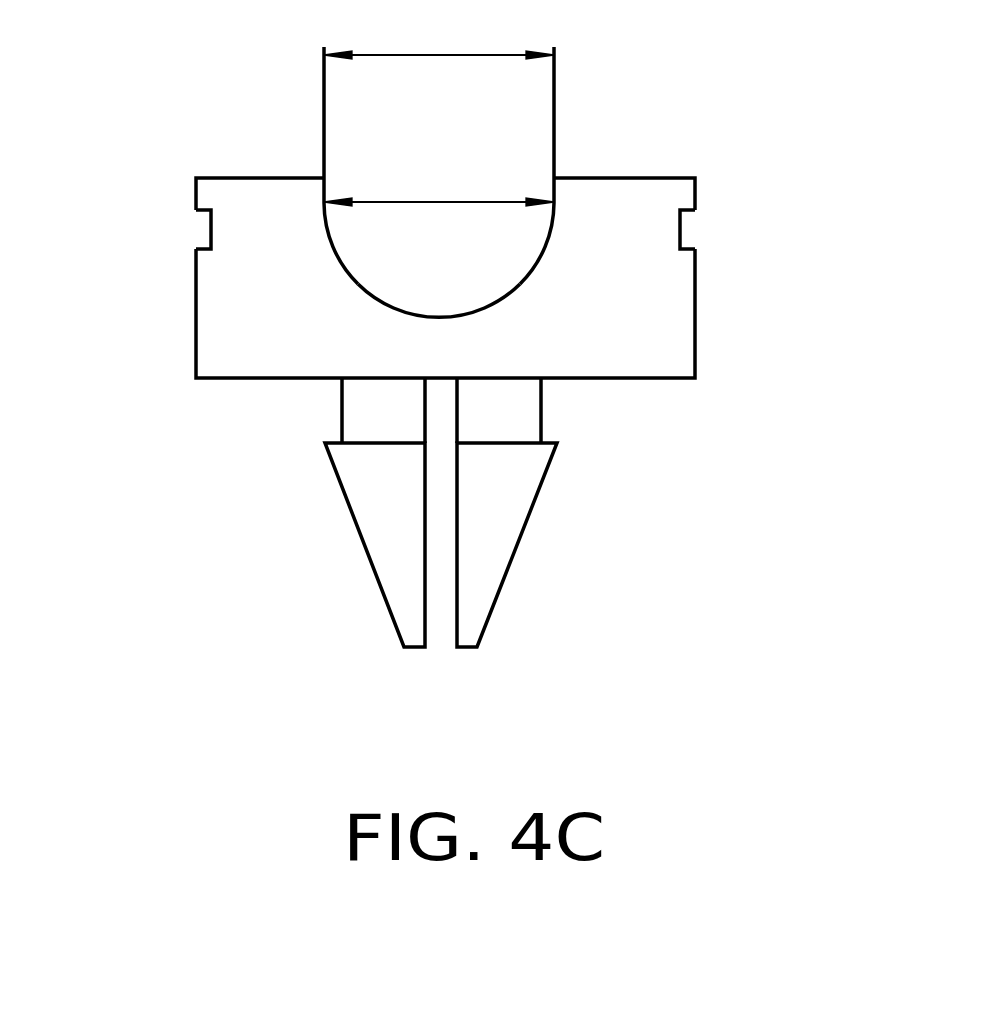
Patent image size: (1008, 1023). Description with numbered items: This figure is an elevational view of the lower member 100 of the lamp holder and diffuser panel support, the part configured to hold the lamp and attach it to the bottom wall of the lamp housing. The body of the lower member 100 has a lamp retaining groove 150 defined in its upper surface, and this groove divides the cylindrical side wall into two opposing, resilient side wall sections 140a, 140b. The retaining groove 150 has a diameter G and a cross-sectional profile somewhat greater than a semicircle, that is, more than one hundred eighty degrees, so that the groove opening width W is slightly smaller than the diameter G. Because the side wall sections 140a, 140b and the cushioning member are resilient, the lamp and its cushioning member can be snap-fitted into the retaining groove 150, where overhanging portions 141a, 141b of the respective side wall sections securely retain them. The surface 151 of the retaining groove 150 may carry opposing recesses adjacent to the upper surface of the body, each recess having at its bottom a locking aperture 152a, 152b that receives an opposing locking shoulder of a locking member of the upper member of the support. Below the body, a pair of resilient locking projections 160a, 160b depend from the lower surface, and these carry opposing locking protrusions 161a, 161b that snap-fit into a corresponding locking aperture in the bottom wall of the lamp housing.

The lower member 100 is at (196, 177).
The side wall section 140a is at (227, 195).
The side wall section 140b is at (664, 190).
The overhanging portion 141a is at (325, 222).
The overhanging portion 141b is at (557, 193).
The lamp retaining groove 150 is at (493, 185).
The surface of the retaining groove 151 is at (403, 312).
The locking aperture 152a is at (200, 230).
The locking aperture 152b is at (683, 230).
The resilient locking projection 160a is at (358, 417).
The resilient locking projection 160b is at (520, 418).
The locking protrusion 161a is at (378, 527).
The locking protrusion 161b is at (503, 532).